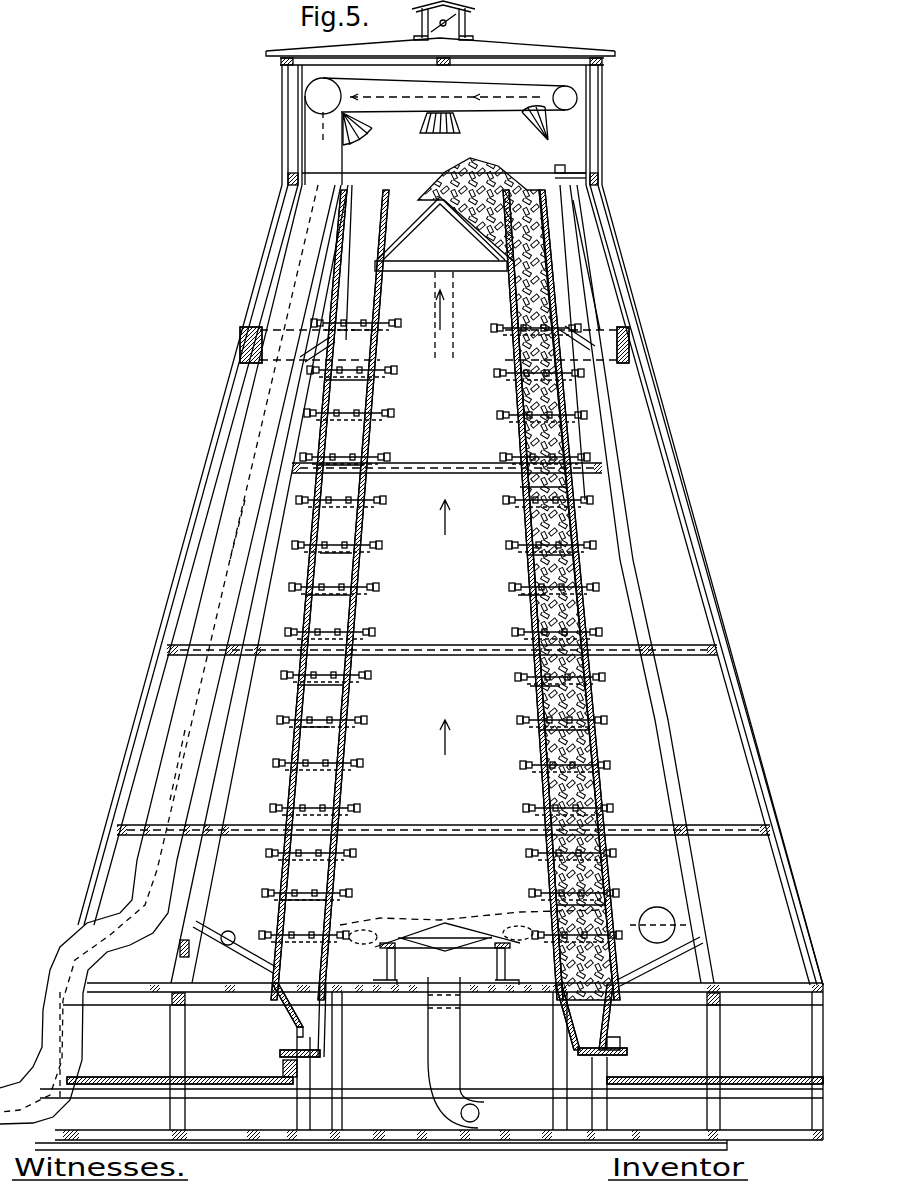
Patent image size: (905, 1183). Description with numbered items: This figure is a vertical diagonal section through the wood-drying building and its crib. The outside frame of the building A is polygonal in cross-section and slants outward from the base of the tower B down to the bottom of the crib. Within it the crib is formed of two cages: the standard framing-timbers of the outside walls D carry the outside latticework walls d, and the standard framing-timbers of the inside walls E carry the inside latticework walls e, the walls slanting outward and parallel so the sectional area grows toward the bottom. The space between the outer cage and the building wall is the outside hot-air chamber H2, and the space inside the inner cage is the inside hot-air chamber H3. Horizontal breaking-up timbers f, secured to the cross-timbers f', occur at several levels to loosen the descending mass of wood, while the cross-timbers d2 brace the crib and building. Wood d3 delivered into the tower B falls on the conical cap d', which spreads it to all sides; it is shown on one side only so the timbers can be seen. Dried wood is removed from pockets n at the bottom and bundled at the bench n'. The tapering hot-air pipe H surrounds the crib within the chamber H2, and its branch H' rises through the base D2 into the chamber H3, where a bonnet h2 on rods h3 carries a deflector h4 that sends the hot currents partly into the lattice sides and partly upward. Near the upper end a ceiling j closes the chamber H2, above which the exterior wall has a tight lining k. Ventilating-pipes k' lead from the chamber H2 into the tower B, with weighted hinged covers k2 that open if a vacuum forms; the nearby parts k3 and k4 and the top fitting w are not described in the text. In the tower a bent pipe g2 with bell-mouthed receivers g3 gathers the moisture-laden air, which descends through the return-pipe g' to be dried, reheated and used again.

The damper valve in vent w is at (466, 25).
The horizontally-disposed bent pipe g2 is at (478, 86).
The bell-mouthed receivers g3 is at (362, 130).
The tower B is at (603, 106).
The gas inlet block k3 is at (566, 164).
The weighted hinged covers k2 is at (562, 172).
The gas pipe branch k4 is at (565, 181).
The return-pipe g' is at (171, 610).
The conical cap d' is at (441, 272).
The wood d3 is at (532, 226).
The ventilating-pipes k' is at (621, 265).
The tight lining k is at (507, 342).
The ceiling j is at (263, 360).
The standard framing-timbers of the outside walls D is at (336, 300).
The standard framing-timbers of the inside walls E is at (386, 352).
The inside latticework walls e is at (384, 392).
The breaking-up timbers f is at (440, 617).
The cross-timbers f' is at (415, 653).
The cross-timbers d2 is at (448, 464).
The outside latticework walls d is at (447, 532).
The outside frame of the building A is at (172, 608).
The outside hot-air chamber H2 is at (672, 537).
The inside hot-air chamber H3 is at (470, 901).
The bonnet h2 is at (447, 921).
The deflector h4 is at (445, 961).
The rods h3 is at (412, 986).
The branch H' is at (456, 1052).
The hot-air pipe H is at (429, 1010).
The base D2 is at (503, 992).
The pockets n is at (455, 1056).
The bench n' is at (463, 1056).